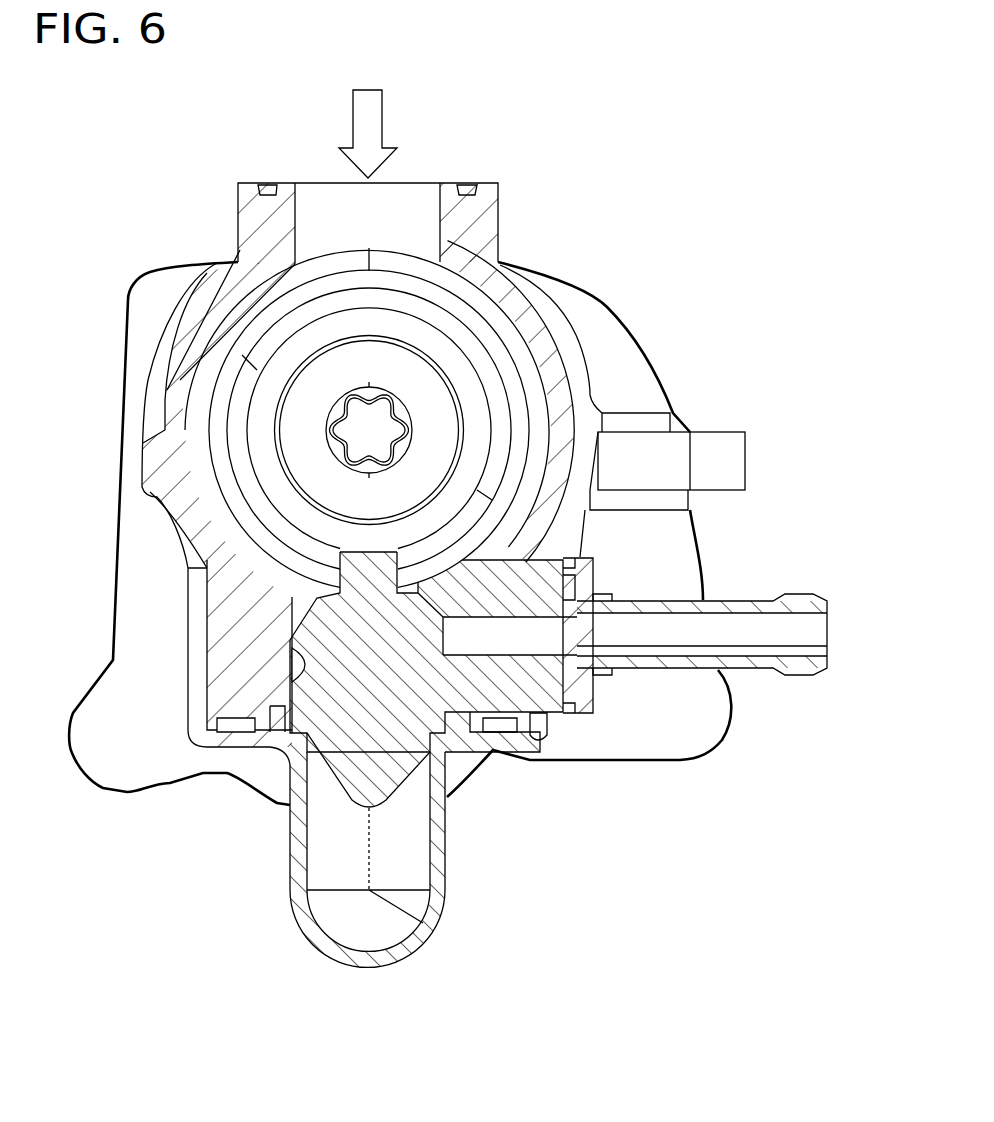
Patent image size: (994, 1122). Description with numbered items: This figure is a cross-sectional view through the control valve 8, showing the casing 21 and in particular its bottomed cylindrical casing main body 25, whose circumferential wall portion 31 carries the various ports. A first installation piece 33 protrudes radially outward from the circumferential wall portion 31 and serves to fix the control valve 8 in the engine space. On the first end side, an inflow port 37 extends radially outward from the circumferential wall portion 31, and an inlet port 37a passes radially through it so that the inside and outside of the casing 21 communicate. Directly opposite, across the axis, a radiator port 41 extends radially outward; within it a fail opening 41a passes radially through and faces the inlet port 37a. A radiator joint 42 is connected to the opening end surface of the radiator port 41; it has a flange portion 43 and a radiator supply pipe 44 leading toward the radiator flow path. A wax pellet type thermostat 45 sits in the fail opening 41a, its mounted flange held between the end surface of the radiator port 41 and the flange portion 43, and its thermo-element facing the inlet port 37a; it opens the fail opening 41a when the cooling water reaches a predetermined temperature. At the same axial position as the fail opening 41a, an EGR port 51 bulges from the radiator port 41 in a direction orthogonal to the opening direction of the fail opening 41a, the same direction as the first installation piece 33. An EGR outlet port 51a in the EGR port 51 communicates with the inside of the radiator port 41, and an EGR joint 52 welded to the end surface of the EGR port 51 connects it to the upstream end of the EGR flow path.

The control valve 8 is at (653, 229).
The casing 21 is at (563, 353).
The casing main body 25 is at (465, 604).
The circumferential wall portion 31 is at (190, 352).
The first installation piece 33 is at (738, 460).
The inflow port 37 is at (238, 222).
The inlet port 37a is at (295, 215).
The radiator port 41 is at (222, 615).
The fail opening 41a is at (292, 677).
The radiator joint 42 is at (418, 956).
The flange portion 43 is at (232, 733).
The radiator supply pipe 44 is at (360, 958).
The thermostat 45 is at (333, 728).
The EGR port 51 is at (543, 722).
The EGR outlet port 51a is at (570, 600).
The EGR joint 52 is at (795, 680).